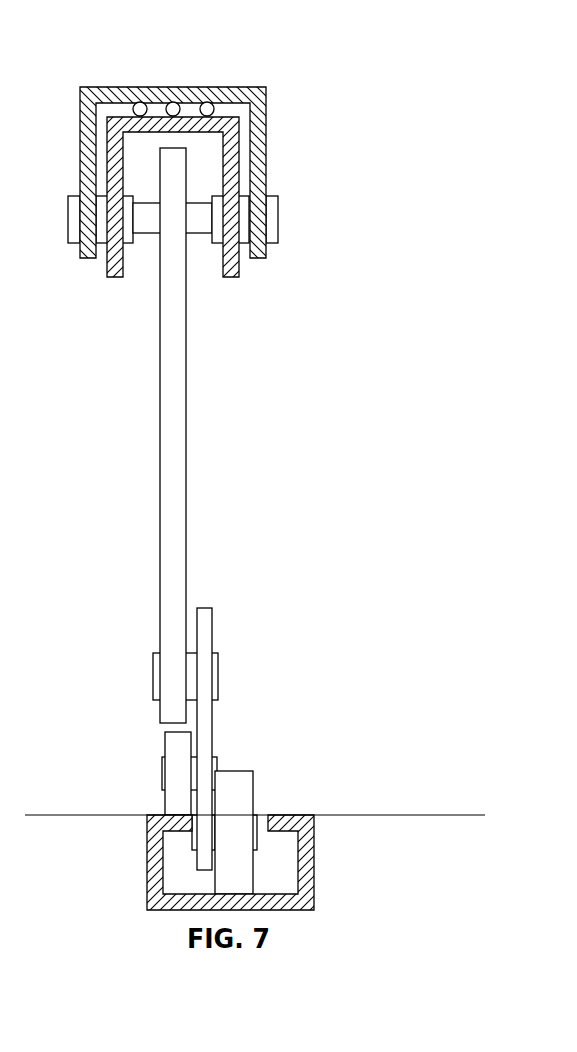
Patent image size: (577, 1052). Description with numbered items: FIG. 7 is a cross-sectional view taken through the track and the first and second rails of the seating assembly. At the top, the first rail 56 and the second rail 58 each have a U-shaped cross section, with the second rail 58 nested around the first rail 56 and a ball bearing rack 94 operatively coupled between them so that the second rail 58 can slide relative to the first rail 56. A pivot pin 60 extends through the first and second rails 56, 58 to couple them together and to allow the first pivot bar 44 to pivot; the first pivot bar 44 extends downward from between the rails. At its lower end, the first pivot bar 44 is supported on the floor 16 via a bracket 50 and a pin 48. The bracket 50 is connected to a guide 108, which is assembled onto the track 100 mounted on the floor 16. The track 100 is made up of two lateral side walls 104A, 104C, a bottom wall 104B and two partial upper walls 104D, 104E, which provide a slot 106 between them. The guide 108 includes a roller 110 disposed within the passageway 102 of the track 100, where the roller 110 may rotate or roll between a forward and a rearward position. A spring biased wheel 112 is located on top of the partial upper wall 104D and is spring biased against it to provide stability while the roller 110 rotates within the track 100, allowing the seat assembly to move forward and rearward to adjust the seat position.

The floor 16 is at (442, 815).
The first pivot bar 44 is at (173, 395).
The pin 48 is at (215, 675).
The bracket 50 is at (202, 623).
The first rail 56 is at (238, 162).
The second rail 58 is at (253, 87).
The pivot pin 60 is at (277, 218).
The ball bearing rack 94 is at (209, 102).
The track 100 is at (318, 862).
The passageway 102 is at (177, 877).
The lateral side wall 104A is at (147, 843).
The bottom wall 104B is at (277, 893).
The lateral side wall 104C is at (315, 845).
The partial upper wall 104D is at (157, 812).
The partial upper wall 104E is at (292, 815).
The slot 106 is at (262, 822).
The guide 108 is at (242, 714).
The roller 110 is at (242, 797).
The spring biased wheel 112 is at (177, 752).